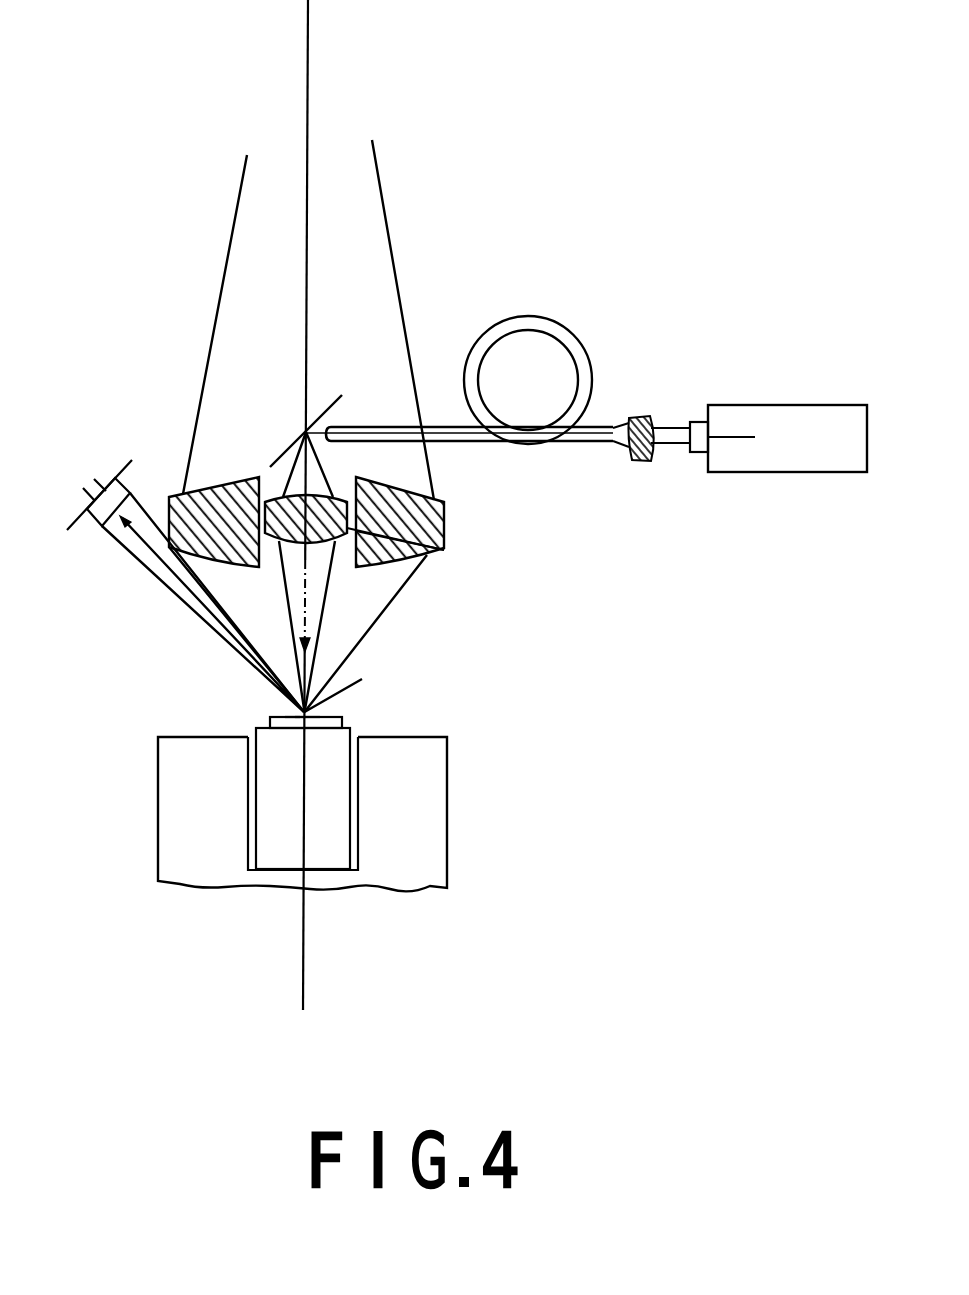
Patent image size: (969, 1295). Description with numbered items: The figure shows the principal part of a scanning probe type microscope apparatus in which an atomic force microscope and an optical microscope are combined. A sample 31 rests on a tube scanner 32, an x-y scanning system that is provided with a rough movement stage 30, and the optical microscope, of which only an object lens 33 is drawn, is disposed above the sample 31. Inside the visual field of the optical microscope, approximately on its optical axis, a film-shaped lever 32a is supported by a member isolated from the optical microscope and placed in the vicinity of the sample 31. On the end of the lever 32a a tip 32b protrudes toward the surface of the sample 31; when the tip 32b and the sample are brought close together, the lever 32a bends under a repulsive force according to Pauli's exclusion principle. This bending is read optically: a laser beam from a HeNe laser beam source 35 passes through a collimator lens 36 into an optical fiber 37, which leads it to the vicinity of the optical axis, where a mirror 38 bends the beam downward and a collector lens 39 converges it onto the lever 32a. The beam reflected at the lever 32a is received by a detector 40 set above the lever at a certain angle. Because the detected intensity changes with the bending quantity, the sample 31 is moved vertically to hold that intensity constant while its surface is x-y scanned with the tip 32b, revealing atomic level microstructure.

The rough movement stage 30 is at (430, 847).
The sample 31 is at (293, 722).
The tube scanner 32 is at (333, 787).
The film-shaped lever 32a is at (302, 710).
The tip 32b is at (296, 708).
The object lens 33 is at (397, 560).
The laser beam source 35 is at (753, 417).
The collimator lens 36 is at (640, 462).
The optical fiber 37 is at (530, 323).
The mirror 38 is at (327, 410).
The collector lens 39 is at (427, 555).
The detector 40 is at (112, 486).